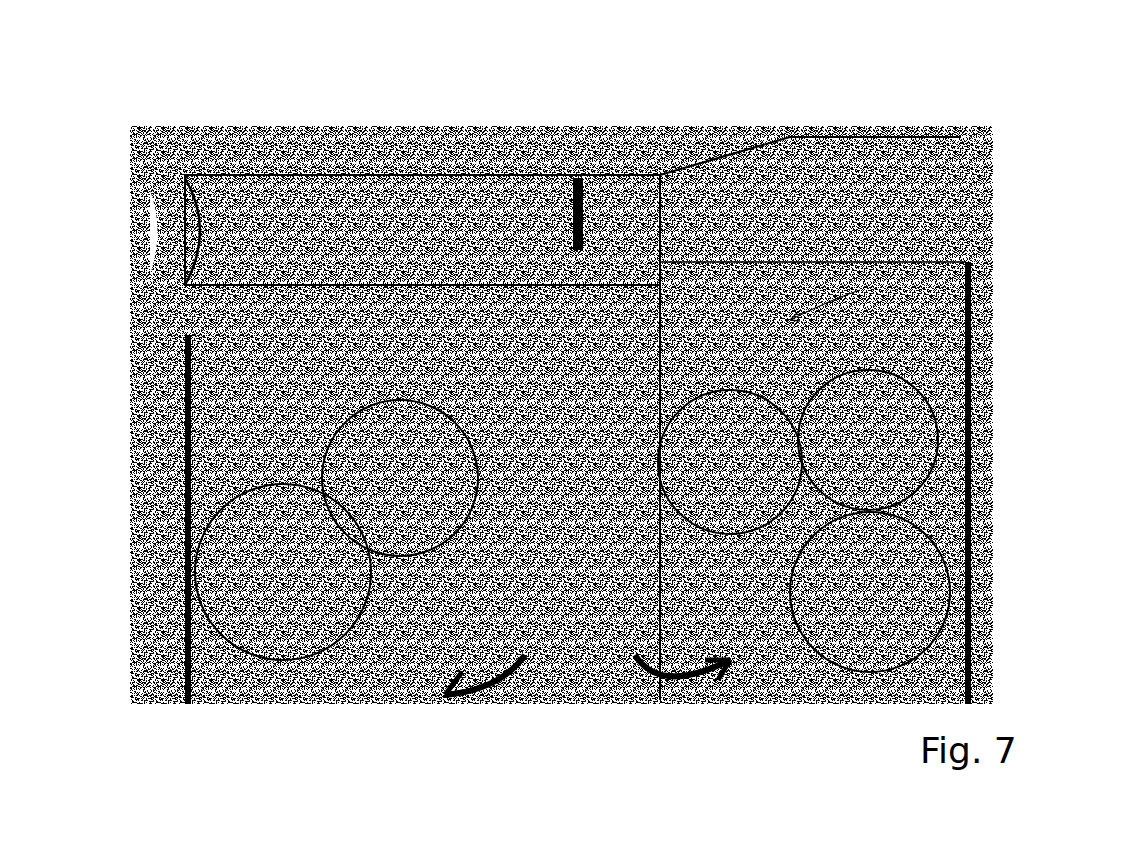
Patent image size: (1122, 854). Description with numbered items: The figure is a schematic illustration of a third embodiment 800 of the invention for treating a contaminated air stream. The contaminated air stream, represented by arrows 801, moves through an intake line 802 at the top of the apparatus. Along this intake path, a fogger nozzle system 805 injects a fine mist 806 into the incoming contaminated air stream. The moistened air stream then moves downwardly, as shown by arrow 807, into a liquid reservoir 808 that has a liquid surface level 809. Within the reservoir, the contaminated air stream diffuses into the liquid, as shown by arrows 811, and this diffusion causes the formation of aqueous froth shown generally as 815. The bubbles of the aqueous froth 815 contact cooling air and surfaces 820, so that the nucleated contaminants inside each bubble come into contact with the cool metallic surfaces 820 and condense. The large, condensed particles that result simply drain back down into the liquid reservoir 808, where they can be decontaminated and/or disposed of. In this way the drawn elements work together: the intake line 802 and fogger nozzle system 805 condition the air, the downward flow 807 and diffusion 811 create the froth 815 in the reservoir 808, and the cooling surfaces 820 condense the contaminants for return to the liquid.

The third embodiment 800 is at (770, 112).
The contaminated air stream arrows 801 is at (178, 183).
The intake line 802 is at (296, 197).
The fogger nozzle system 805 is at (595, 208).
The fine mist 806 is at (540, 245).
The downward flow arrow 807 is at (610, 330).
The liquid reservoir 808 is at (415, 688).
The liquid surface level 809 is at (185, 490).
The diffusion arrows 811 is at (698, 690).
The aqueous froth 815 is at (252, 437).
The cooling surfaces 820 is at (915, 322).